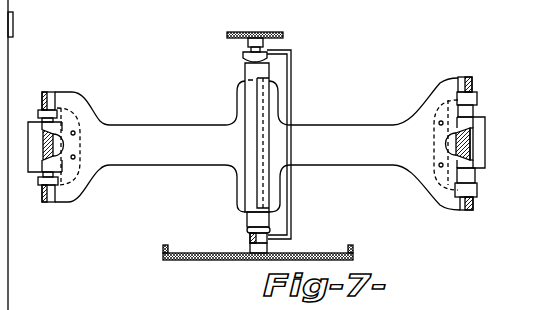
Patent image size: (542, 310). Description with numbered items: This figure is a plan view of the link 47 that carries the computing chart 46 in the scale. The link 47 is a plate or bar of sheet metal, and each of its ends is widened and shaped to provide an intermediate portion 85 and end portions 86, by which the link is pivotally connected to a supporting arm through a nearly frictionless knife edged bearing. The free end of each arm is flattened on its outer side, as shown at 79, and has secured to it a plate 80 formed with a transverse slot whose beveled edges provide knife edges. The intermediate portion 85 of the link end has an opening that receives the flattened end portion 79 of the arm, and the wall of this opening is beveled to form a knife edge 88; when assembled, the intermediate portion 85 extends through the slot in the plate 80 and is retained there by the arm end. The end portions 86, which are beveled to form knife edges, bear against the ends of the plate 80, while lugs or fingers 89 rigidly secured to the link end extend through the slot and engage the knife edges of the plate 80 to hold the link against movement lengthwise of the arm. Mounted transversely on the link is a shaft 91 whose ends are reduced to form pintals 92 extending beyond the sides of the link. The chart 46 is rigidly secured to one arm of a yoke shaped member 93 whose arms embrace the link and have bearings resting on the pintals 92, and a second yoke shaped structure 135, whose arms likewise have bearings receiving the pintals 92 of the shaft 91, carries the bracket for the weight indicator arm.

The chart 46 is at (225, 262).
The supporting member or link 47 is at (169, 127).
The flattened end portion 79 is at (50, 148).
The plate 80 is at (48, 92).
The intermediate portion 85 is at (30, 122).
The end portions 86 is at (70, 100).
The knife edge 88 is at (30, 172).
The lugs or fingers 89 is at (40, 113).
The transverse shaft 91 is at (250, 183).
The pintals 92 is at (257, 32).
The yoke shaped member 93 is at (282, 33).
The yoke shaped structure 135 is at (292, 90).